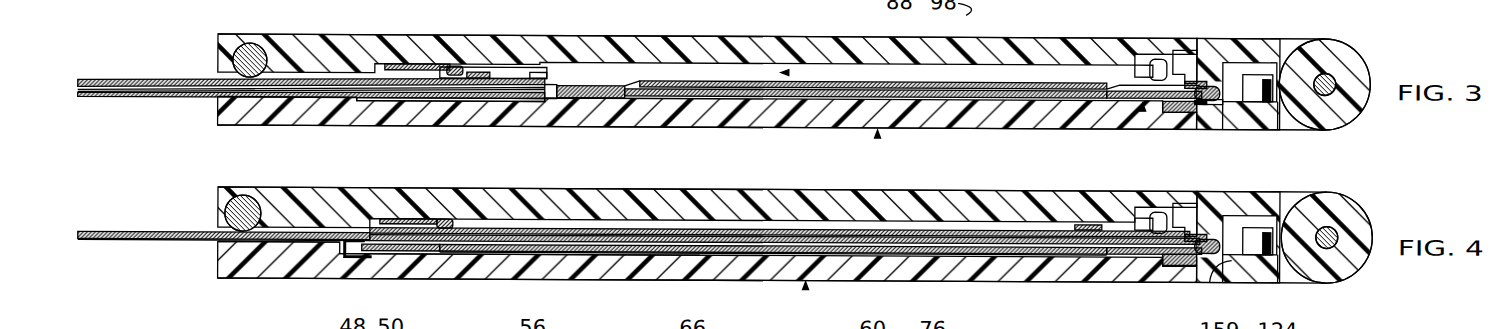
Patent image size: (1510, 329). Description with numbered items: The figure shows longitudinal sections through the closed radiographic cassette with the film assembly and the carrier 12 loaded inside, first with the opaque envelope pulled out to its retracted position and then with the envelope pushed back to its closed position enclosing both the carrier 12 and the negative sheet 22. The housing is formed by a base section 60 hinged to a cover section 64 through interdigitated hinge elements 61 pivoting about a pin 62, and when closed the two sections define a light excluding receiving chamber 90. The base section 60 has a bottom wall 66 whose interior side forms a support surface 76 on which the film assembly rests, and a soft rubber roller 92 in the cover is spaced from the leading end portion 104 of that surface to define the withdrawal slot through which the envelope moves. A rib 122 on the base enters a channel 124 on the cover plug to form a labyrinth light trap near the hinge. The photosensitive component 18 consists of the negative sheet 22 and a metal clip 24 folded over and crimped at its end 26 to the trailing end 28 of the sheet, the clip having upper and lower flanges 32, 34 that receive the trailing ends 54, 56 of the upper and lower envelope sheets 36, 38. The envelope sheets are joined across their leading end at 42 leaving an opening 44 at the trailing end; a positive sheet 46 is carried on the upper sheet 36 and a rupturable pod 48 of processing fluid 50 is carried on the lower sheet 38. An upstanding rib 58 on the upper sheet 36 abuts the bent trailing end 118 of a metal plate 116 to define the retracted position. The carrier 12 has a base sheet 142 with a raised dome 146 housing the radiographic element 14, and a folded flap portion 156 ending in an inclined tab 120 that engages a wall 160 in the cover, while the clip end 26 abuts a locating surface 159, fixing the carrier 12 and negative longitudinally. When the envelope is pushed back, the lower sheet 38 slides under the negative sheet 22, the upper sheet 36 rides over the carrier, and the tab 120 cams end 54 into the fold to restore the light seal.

In FIG. 3, the carrier 12 is at (920, 75).
In FIG. 3, the radiographic element 14 is at (738, 77).
In FIG. 4, the radiographic element 14 is at (670, 243).
In FIG. 3, the photosensitive component 18 is at (1143, 106).
In FIG. 3, the negative sheet 22 is at (1027, 95).
In FIG. 4, the negative sheet 22 is at (947, 251).
In FIG. 3, the clip 24 is at (1208, 73).
In FIG. 4, the clip 24 is at (1207, 231).
In FIG. 3, the end 26 is at (1223, 100).
In FIG. 3, the trailing end 28 is at (1200, 100).
In FIG. 3, the upper flange 32 is at (1183, 72).
In FIG. 4, the upper flange 32 is at (1200, 222).
In FIG. 3, the lower flange 34 is at (1185, 108).
In FIG. 4, the lower flange 34 is at (1177, 261).
In FIG. 3, the upper facing sheet 36 is at (150, 80).
In FIG. 4, the upper facing sheet 36 is at (163, 232).
In FIG. 3, the lower facing sheet 38 is at (151, 98).
In FIG. 4, the lower facing sheet 38 is at (163, 241).
In FIG. 4, the leading end joint 42 is at (303, 241).
In FIG. 3, the opening 44 is at (550, 86).
In FIG. 3, the positive sheet 46 is at (515, 77).
In FIG. 4, the rupturable pod 48 is at (357, 257).
In FIG. 4, the fluid processing composition 50 is at (393, 250).
In FIG. 3, the trailing end 54 is at (537, 71).
In FIG. 3, the trailing end 56 is at (536, 89).
In FIG. 4, the trailing end 56 is at (503, 253).
In FIG. 3, the rib 58 is at (485, 71).
In FIG. 4, the rib 58 is at (1083, 221).
In FIG. 3, the base section 60 is at (878, 134).
In FIG. 4, the base section 60 is at (806, 286).
In FIG. 3, the hinge elements 61 is at (1363, 63).
In FIG. 4, the hinge elements 61 is at (1363, 217).
In FIG. 3, the pin 62 is at (1332, 90).
In FIG. 4, the pin 62 is at (1333, 245).
In FIG. 3, the cover section 64 is at (790, 45).
In FIG. 4, the cover section 64 is at (733, 203).
In FIG. 3, the bottom wall 66 is at (740, 115).
In FIG. 4, the bottom wall 66 is at (695, 268).
In FIG. 4, the support surface 76 is at (848, 252).
In FIG. 3, the receiving chamber 90 is at (789, 70).
In FIG. 3, the roller 92 is at (266, 43).
In FIG. 4, the roller 92 is at (252, 194).
In FIG. 4, the leading end portion 104 is at (270, 242).
In FIG. 3, the metal plate 116 is at (407, 62).
In FIG. 4, the metal plate 116 is at (390, 217).
In FIG. 3, the trailing end 118 is at (457, 64).
In FIG. 4, the trailing end 118 is at (440, 218).
In FIG. 3, the tab 120 is at (1158, 55).
In FIG. 4, the tab 120 is at (1158, 208).
In FIG. 3, the rib 122 is at (1245, 73).
In FIG. 4, the rib 122 is at (1248, 238).
In FIG. 3, the channel 124 is at (1257, 82).
In FIG. 4, the channel 124 is at (1292, 256).
In FIG. 3, the base sheet 142 is at (587, 86).
In FIG. 4, the base sheet 142 is at (570, 227).
In FIG. 3, the dome 146 is at (702, 80).
In FIG. 4, the dome 146 is at (632, 234).
In FIG. 3, the flap portion 156 is at (1192, 77).
In FIG. 4, the flap portion 156 is at (1248, 236).
In FIG. 4, the locating surface 159 is at (1233, 257).
In FIG. 3, the wall 160 is at (1153, 62).
In FIG. 4, the wall 160 is at (1153, 214).